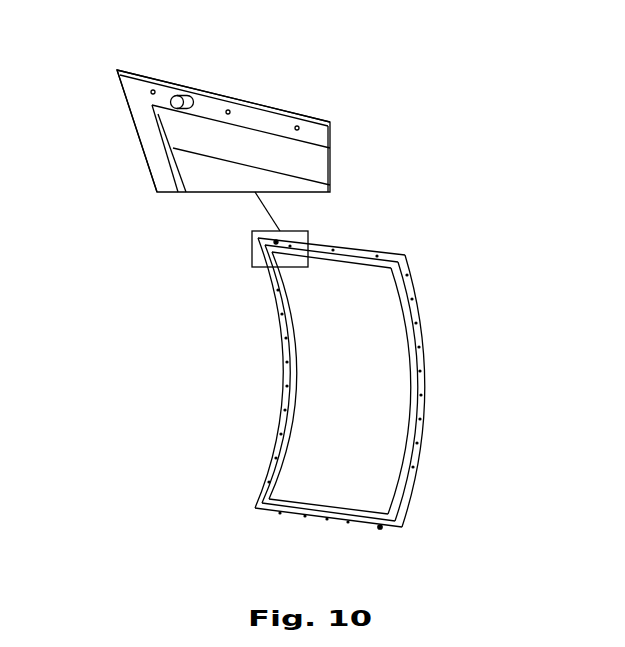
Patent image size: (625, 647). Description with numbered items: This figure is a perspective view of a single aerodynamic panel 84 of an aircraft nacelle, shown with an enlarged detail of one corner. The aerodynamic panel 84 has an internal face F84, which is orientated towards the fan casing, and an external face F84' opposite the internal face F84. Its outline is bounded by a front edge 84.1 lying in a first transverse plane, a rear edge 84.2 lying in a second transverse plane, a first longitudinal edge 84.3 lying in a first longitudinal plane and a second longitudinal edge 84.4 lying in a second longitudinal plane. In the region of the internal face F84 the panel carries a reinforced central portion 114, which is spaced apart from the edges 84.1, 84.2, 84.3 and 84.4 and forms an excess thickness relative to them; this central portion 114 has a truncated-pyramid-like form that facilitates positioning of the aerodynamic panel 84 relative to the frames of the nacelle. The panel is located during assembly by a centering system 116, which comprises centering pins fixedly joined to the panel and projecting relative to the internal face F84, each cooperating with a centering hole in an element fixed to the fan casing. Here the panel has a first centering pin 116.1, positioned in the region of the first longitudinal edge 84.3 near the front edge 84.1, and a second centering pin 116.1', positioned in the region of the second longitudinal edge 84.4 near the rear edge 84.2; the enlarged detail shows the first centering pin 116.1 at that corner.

The aerodynamic panel 84 is at (300, 402).
The front edge 84.1 is at (143, 150).
The rear edge 84.2 is at (425, 392).
The first longitudinal edge 84.3 is at (247, 100).
The second longitudinal edge 84.4 is at (328, 525).
The reinforced central portion 114 is at (287, 174).
The internal face F84 is at (243, 219).
The external face F84' is at (337, 94).
The centering system 116 is at (189, 76).
The first centering pin 116.1 is at (186, 164).
The second centering pin 116.1' is at (428, 521).